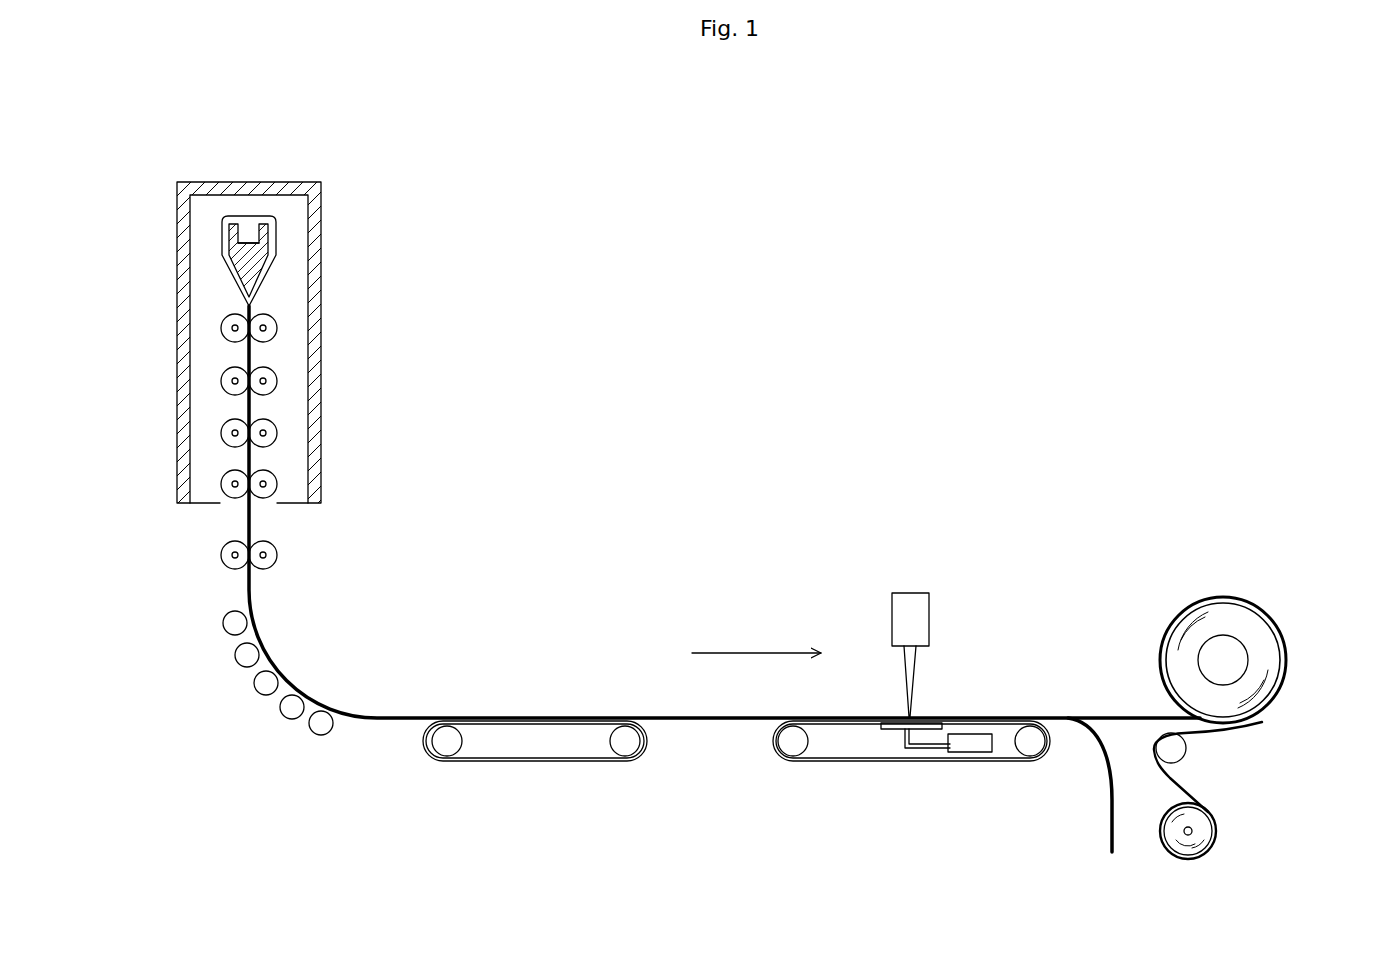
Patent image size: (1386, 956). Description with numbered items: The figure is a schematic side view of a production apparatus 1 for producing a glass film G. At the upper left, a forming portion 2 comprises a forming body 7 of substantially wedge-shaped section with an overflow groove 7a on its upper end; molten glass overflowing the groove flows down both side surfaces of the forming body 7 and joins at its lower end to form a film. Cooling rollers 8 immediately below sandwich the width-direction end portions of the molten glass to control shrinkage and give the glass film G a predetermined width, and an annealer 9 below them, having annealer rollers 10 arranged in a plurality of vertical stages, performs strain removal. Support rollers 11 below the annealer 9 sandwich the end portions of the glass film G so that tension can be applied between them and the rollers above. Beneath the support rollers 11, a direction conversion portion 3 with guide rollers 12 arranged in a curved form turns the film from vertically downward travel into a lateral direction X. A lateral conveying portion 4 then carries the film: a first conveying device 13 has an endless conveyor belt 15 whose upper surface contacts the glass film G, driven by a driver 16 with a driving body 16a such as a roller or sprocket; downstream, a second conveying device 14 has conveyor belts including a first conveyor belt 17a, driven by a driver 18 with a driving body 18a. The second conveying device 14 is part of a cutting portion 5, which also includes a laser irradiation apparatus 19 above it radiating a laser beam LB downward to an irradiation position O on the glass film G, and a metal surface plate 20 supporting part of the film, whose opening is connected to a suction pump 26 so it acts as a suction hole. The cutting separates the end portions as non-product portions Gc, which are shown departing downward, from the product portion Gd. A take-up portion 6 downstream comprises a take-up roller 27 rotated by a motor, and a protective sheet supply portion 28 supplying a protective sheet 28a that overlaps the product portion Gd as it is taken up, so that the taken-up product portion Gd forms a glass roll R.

The production apparatus 1 is at (950, 212).
The forming portion 2 is at (352, 205).
The direction conversion portion 3 is at (242, 691).
The lateral conveying portion 4 is at (538, 809).
The cutting portion 5 is at (916, 715).
The take-up portion 6 is at (1253, 619).
The forming body 7 is at (262, 263).
The overflow groove 7a is at (248, 236).
The cooling rollers 8 is at (278, 325).
The annealer 9 is at (210, 365).
The annealer rollers 10 is at (278, 378).
The support rollers 11 is at (279, 553).
The guide rollers 12 is at (222, 623).
The first conveying device 13 is at (549, 771).
The second conveying device 14 is at (916, 821).
The conveyor belt 15 is at (470, 763).
The driver 16 is at (608, 749).
The driving body 16a is at (627, 744).
The first conveyor belt 17a is at (842, 764).
The driver 18 is at (1012, 754).
The driving body 18a is at (1035, 746).
The laser irradiation apparatus 19 is at (912, 592).
The surface plate 20 is at (897, 752).
The suction pump 26 is at (967, 755).
The take-up roller 27 is at (1240, 655).
The protective sheet supply portion 28 is at (1206, 827).
The protective sheet 28a is at (1196, 776).
The glass film G is at (253, 405).
The product portion Gd is at (1109, 713).
The non-product portion Gc is at (1105, 834).
The laser beam LB is at (915, 660).
The irradiation position O is at (907, 716).
The glass roll R is at (1216, 598).
The lateral direction X is at (756, 638).